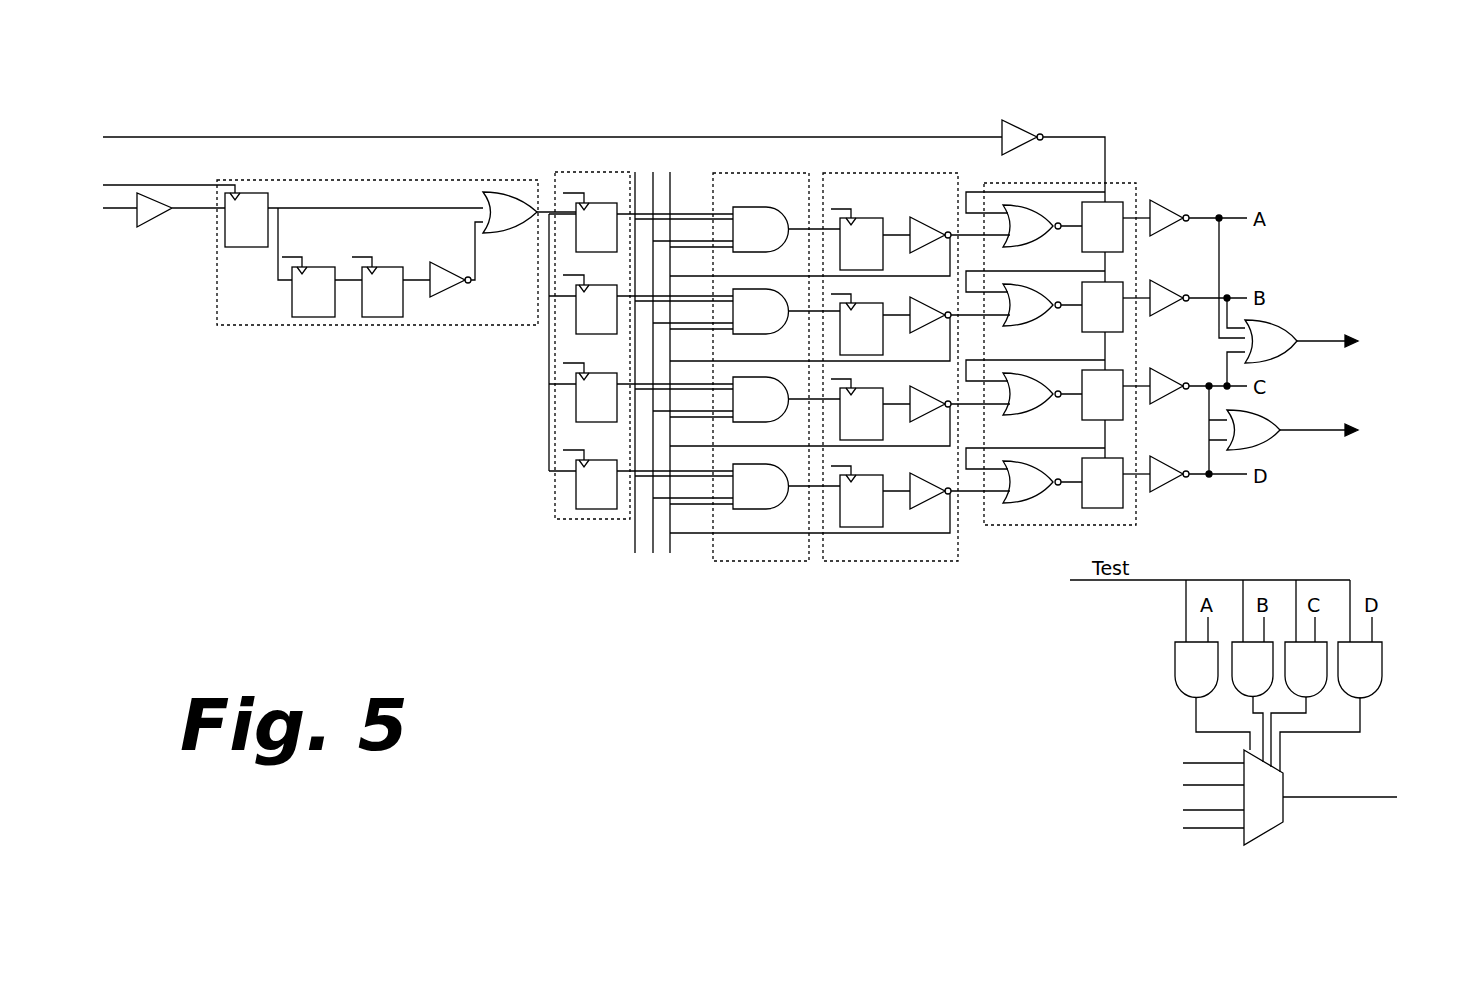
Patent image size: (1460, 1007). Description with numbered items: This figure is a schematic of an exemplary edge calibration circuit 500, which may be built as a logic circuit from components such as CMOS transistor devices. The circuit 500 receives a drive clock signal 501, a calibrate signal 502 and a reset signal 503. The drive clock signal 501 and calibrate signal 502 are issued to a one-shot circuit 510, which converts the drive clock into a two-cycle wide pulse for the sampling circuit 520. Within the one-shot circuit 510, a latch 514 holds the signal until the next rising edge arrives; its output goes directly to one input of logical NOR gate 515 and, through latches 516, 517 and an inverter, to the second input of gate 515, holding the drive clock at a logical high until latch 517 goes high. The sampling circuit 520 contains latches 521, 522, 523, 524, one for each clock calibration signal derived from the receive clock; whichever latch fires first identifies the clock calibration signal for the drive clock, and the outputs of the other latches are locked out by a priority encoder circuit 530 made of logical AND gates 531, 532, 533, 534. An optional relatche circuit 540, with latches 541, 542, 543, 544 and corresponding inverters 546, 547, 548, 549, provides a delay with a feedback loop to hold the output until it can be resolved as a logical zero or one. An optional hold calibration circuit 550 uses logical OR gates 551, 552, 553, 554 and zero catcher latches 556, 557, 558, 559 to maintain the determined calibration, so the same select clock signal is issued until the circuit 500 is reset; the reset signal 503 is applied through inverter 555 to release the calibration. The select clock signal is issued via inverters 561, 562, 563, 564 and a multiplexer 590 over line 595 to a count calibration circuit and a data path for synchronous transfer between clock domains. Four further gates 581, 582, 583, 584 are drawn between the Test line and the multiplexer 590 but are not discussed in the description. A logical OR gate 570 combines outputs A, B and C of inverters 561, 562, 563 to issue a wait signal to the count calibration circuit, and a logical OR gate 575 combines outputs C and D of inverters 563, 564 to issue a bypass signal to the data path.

The edge calibration circuit 500 is at (759, 97).
The drive clock signal 501 is at (203, 185).
The calibrate signal 502 is at (120, 212).
The reset signal 503 is at (180, 136).
The one-shot circuit 510 is at (243, 325).
The latch 514 is at (354, 236).
The logical NOR gate 515 is at (529, 212).
The latch 516 is at (322, 287).
The latch 517 is at (379, 287).
The sampling circuit 520 is at (562, 519).
The latch 521 is at (641, 212).
The latch 522 is at (641, 294).
The latch 523 is at (641, 382).
The latch 524 is at (641, 469).
The priority encoder circuit 530 is at (740, 561).
The logical AND gate 531 is at (737, 229).
The logical AND gate 532 is at (737, 311).
The logical AND gate 533 is at (737, 399).
The logical AND gate 534 is at (737, 486).
The relatche circuit 540 is at (860, 561).
The latch 541 is at (869, 228).
The latch 542 is at (869, 313).
The latch 543 is at (869, 398).
The latch 544 is at (869, 485).
The inverter 546 is at (937, 247).
The inverter 547 is at (937, 327).
The inverter 548 is at (937, 416).
The inverter 549 is at (937, 503).
The hold calibration circuit 550 is at (999, 525).
The logical OR gate 551 is at (1035, 219).
The logical OR gate 552 is at (1035, 298).
The logical OR gate 553 is at (1035, 387).
The logical OR gate 554 is at (1035, 475).
The inverter 555 is at (1025, 151).
The zero catcher latch 556 is at (1116, 227).
The zero catcher latch 557 is at (1116, 307).
The zero catcher latch 558 is at (1116, 395).
The zero catcher latch 559 is at (1116, 483).
The inverter 561 is at (1155, 234).
The inverter 562 is at (1165, 312).
The inverter 563 is at (1160, 402).
The inverter 564 is at (1160, 490).
The logical OR gate 570 is at (1326, 341).
The logical OR gate 575 is at (1330, 430).
The AND gate 581 is at (1212, 696).
The AND gate 582 is at (1254, 702).
The AND gate 583 is at (1300, 704).
The AND gate 584 is at (1331, 707).
The multiplexer 590 is at (1193, 797).
The line 595 is at (1330, 797).